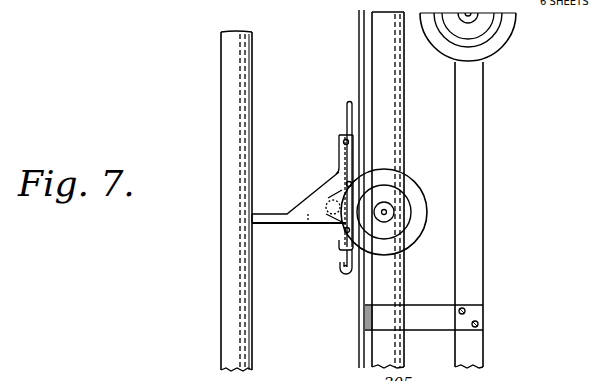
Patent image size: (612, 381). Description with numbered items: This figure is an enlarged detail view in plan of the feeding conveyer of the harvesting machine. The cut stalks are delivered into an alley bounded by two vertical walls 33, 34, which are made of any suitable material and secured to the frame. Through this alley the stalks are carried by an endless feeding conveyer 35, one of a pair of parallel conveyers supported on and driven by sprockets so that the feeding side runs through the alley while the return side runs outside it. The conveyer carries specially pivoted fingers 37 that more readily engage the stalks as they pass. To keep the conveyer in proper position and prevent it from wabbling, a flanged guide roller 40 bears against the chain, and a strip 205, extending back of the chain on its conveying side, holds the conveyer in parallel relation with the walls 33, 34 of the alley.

The vertical wall 33 is at (245, 284).
The vertical wall 34 is at (372, 298).
The endless conveyer 35 is at (347, 125).
The pivoted finger 37 is at (306, 224).
The flanged guide roller 40 is at (415, 206).
The strip 205 is at (362, 282).